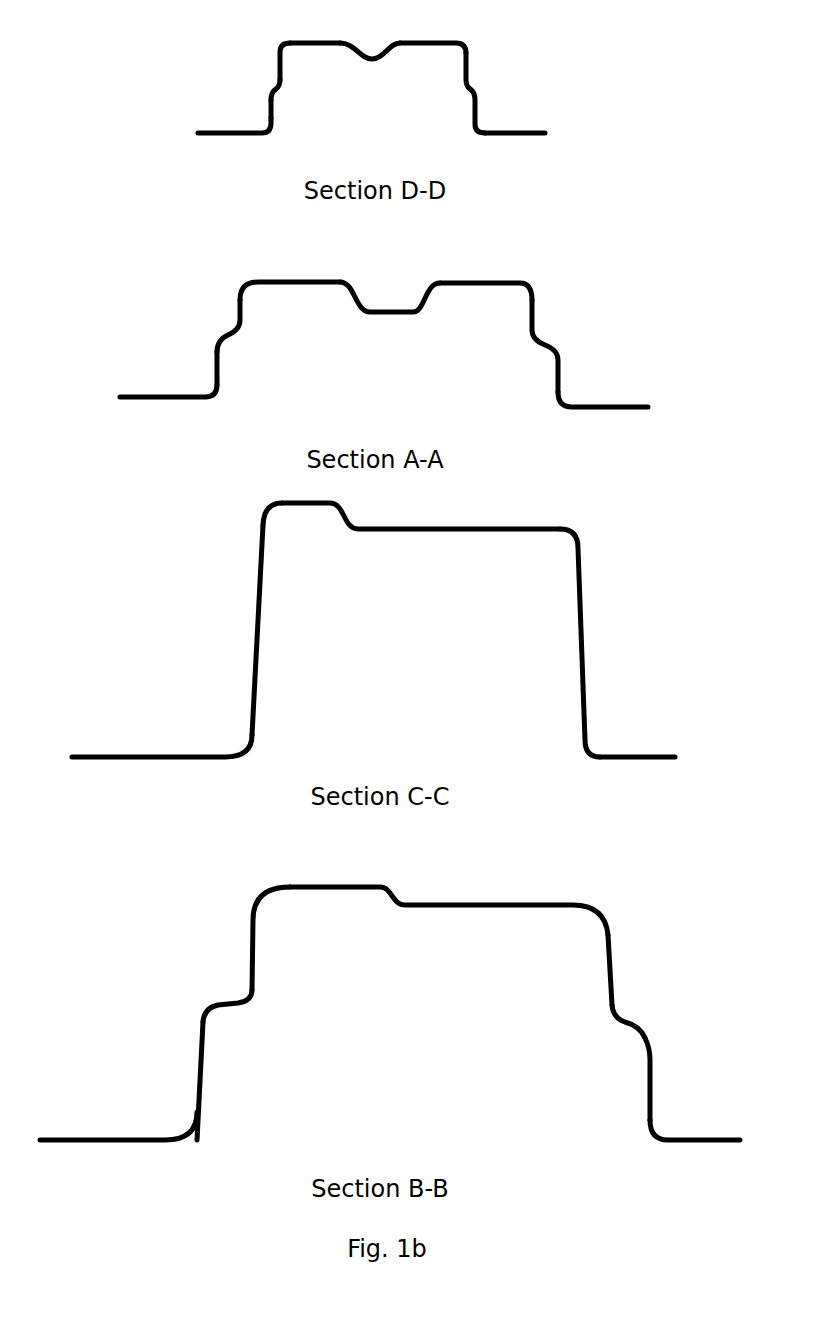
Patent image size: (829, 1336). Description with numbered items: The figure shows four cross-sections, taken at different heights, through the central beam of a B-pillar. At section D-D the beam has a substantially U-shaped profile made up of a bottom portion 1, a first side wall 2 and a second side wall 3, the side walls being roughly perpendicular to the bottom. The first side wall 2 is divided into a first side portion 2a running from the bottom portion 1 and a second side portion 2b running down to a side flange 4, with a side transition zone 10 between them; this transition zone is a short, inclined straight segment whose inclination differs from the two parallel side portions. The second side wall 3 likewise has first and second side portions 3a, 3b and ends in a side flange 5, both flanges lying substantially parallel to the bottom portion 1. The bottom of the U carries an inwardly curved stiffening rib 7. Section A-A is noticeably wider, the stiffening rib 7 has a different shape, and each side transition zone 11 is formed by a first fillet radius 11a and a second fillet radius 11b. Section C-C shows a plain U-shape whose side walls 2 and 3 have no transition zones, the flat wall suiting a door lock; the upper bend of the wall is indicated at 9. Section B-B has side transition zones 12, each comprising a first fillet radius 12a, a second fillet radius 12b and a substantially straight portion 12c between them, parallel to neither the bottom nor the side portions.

The bottom portion 1 is at (447, 40).
The first side wall 2 is at (258, 622).
The first side portion 2a is at (278, 47).
The second side portion 2b is at (270, 105).
The second side wall 3 is at (583, 636).
The first side portion 3a is at (470, 65).
The second side portion 3b is at (478, 108).
The side flange 4 is at (245, 133).
The side flange 5 is at (515, 140).
The stiffening rib 7 is at (372, 72).
The upper bend of left side wall 9 is at (254, 508).
The side transition zone 10 is at (262, 79).
The side transition zone 11 is at (563, 339).
The first fillet radius 11a is at (225, 317).
The second fillet radius 11b is at (236, 359).
The side transition zone 12 is at (244, 1022).
The first fillet radius 12a is at (624, 1003).
The second fillet radius 12b is at (636, 1049).
The substantially straight portion 12c is at (637, 1023).